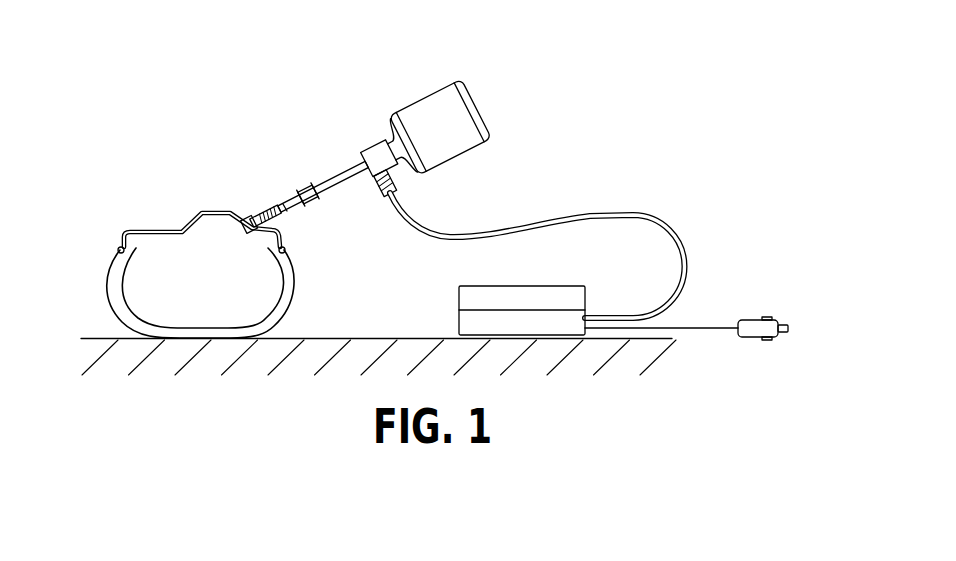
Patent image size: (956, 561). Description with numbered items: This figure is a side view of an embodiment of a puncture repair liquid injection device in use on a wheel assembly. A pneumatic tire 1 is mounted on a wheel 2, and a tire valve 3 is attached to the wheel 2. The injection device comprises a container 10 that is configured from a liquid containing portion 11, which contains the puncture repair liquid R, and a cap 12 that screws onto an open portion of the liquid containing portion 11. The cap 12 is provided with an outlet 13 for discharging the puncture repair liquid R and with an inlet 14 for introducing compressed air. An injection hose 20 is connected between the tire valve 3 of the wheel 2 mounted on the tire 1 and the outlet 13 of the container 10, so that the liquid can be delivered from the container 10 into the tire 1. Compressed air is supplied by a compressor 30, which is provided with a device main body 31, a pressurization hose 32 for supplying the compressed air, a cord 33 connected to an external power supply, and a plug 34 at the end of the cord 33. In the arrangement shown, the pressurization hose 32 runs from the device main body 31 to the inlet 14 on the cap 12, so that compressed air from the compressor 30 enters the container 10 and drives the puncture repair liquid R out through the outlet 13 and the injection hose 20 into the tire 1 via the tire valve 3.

The pneumatic tire 1 is at (109, 262).
The wheel 2 is at (168, 230).
The tire valve 3 is at (262, 218).
The container 10 is at (361, 138).
The puncture repair liquid R is at (417, 98).
The liquid containing portion 11 is at (440, 127).
The cap 12 is at (385, 155).
The outlet 13 is at (322, 187).
The inlet 14 is at (385, 183).
The injection hose 20 is at (284, 208).
The compressor 30 is at (559, 286).
The device main body 31 is at (580, 300).
The pressurization hose 32 is at (557, 213).
The cord 33 is at (702, 328).
The plug 34 is at (755, 325).